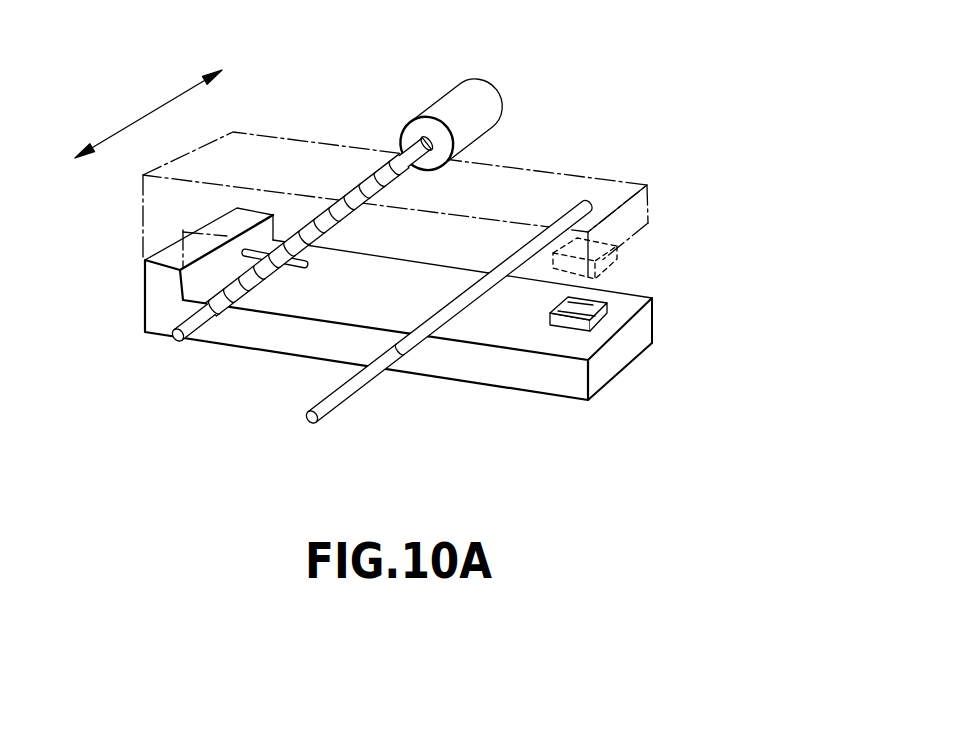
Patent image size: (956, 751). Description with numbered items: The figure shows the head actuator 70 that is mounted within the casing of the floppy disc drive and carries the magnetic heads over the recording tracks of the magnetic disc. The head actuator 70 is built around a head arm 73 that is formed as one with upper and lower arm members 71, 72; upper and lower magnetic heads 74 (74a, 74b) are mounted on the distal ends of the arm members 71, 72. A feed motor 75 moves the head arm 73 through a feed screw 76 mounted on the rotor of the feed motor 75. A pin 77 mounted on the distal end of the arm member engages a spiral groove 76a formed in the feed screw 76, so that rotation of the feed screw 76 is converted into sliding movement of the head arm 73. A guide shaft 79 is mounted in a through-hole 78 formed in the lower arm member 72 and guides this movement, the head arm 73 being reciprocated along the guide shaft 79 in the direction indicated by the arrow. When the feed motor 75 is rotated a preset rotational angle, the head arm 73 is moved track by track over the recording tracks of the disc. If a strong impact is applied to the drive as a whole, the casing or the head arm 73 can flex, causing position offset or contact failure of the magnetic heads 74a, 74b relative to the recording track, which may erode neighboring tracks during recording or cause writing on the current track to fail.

The head actuator 70 is at (403, 236).
The upper arm member 71 is at (200, 168).
The lower arm member 72 is at (160, 302).
The head arm 73 is at (330, 266).
The magnetic heads 74 is at (674, 284).
The upper magnetic head 74a is at (612, 271).
The lower magnetic head 74b is at (607, 314).
The feed motor 75 is at (467, 80).
The feed screw 76 is at (281, 280).
The spiral groove 76a is at (207, 322).
The pin 77 is at (297, 270).
The through-hole 78 is at (449, 331).
The guide shaft 79 is at (337, 402).